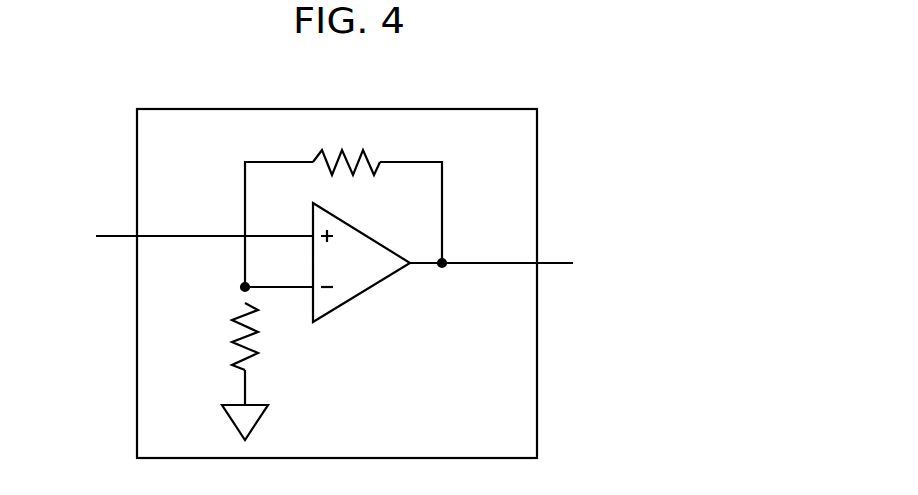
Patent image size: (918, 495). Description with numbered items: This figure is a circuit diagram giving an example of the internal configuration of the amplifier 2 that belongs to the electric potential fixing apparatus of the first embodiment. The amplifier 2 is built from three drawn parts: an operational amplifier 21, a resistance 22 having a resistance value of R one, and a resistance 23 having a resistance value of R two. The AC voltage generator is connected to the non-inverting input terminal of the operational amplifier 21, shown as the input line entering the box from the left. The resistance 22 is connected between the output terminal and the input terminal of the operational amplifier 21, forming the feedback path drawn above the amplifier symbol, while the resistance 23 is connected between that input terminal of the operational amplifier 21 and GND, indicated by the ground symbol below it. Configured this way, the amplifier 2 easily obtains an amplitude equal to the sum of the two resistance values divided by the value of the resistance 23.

The amplifier 2 is at (537, 392).
The operational amplifier 21 is at (375, 283).
The resistance 22 is at (353, 176).
The resistance 23 is at (256, 332).